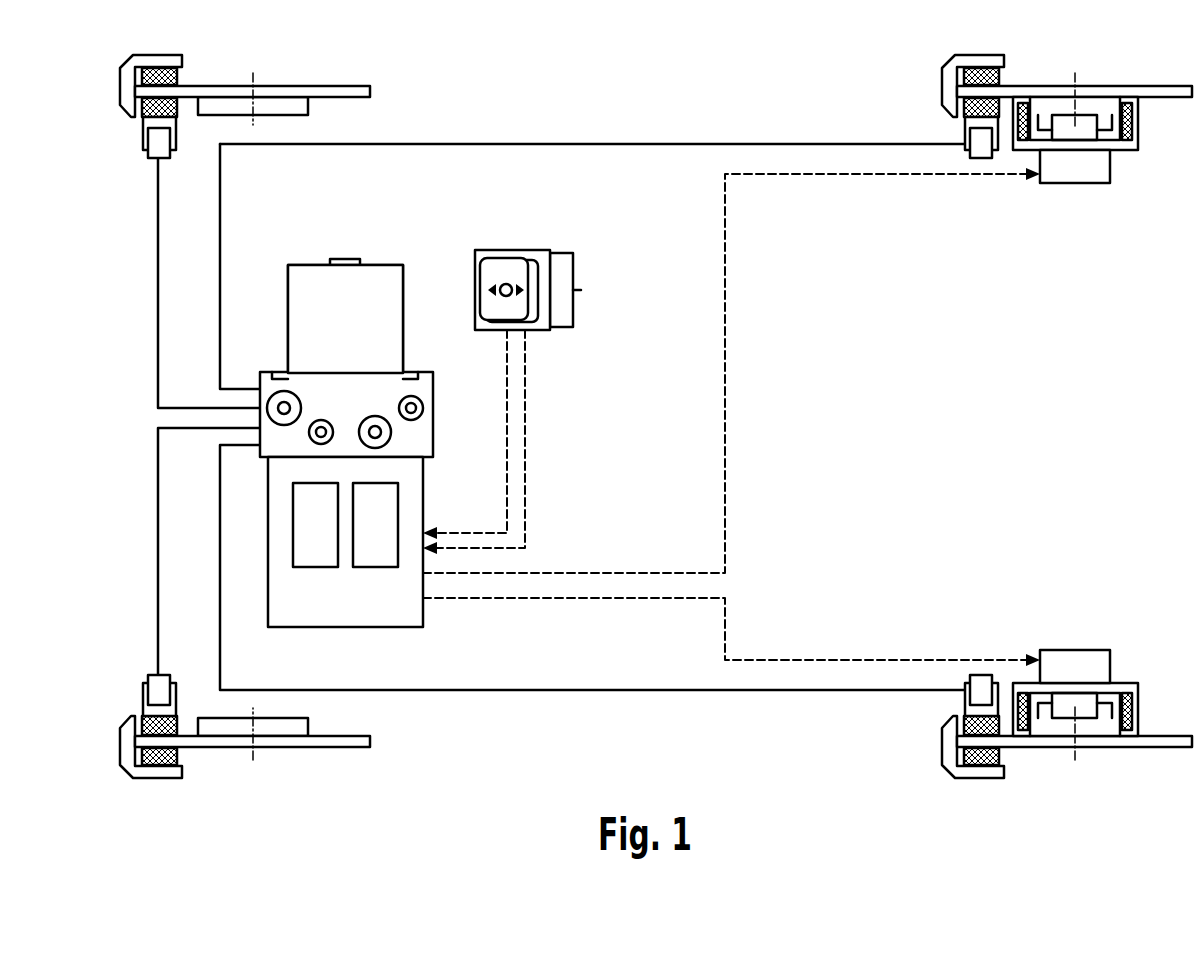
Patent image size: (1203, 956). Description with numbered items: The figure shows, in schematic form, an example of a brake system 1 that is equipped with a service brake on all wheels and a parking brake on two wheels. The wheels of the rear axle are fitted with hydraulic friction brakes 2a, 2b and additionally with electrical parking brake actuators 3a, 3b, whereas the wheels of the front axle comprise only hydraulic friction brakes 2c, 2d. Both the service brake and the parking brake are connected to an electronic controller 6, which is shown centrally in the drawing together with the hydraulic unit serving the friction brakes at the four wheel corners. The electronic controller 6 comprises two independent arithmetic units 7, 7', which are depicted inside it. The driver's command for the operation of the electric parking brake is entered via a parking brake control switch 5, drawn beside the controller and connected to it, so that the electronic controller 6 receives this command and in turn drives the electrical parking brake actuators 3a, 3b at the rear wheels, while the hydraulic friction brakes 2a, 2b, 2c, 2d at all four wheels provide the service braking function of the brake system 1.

The brake system 1 is at (607, 104).
The hydraulic friction brake 2a is at (965, 141).
The hydraulic friction brake 2b is at (965, 692).
The hydraulic friction brake 2c is at (143, 690).
The hydraulic friction brake 2d is at (143, 145).
The electrical parking brake actuator 3a is at (1073, 178).
The electrical parking brake actuator 3b is at (1073, 650).
The parking brake control switch 5 is at (523, 250).
The electronic controller 6 is at (423, 488).
The arithmetic unit 7 is at (315, 578).
The arithmetic unit 7' is at (375, 578).